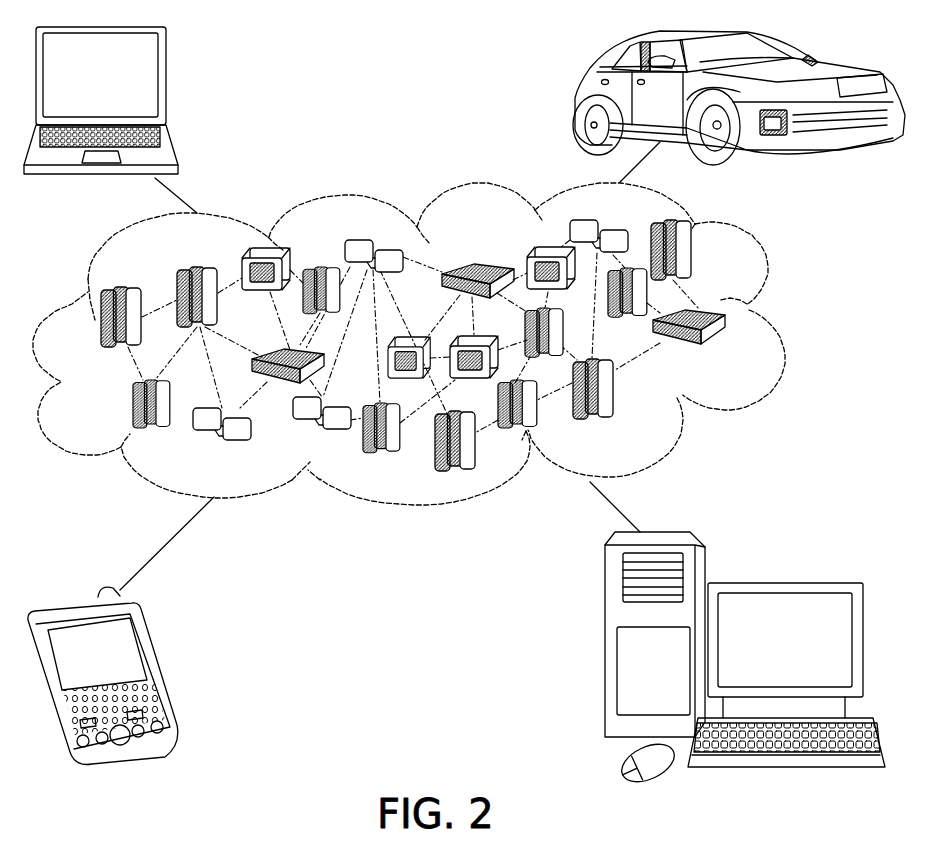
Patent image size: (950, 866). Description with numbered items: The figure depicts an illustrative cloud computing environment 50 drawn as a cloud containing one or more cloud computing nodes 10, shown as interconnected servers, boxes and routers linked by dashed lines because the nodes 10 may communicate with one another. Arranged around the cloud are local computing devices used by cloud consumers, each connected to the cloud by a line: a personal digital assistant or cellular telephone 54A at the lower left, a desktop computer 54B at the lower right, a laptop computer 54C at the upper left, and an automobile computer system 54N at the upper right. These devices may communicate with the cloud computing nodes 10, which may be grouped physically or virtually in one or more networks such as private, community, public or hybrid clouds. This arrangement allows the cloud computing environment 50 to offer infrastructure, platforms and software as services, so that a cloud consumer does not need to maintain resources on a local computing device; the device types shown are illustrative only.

The cloud computing environment 50 is at (436, 344).
The cloud computing nodes 10 is at (733, 354).
The personal digital assistant (PDA) or cellular telephone 54A is at (155, 664).
The desktop computer 54B is at (780, 583).
The laptop computer 54C is at (166, 82).
The automobile computer system 54N is at (570, 93).